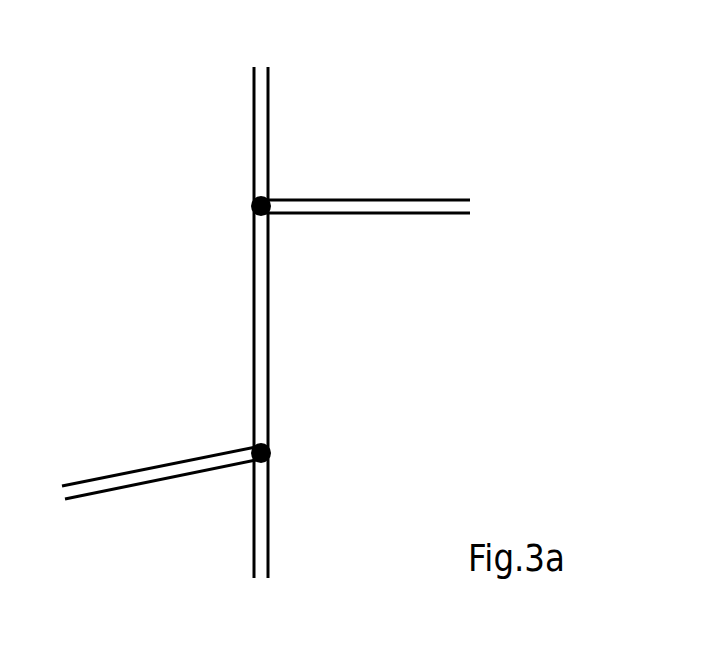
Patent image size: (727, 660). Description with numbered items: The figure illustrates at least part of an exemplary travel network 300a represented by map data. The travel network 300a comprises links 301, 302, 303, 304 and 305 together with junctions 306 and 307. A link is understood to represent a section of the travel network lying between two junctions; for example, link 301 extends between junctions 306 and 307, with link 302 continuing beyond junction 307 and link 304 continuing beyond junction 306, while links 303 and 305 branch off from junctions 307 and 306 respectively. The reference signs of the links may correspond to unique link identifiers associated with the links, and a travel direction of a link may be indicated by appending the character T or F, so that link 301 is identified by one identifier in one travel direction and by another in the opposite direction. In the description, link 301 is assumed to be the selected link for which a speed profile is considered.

The travel network 300a is at (476, 97).
The link 301 is at (268, 323).
The link 302 is at (268, 120).
The link 303 is at (385, 200).
The link 304 is at (268, 523).
The link 305 is at (157, 465).
The junction 306 is at (271, 455).
The junction 307 is at (251, 203).